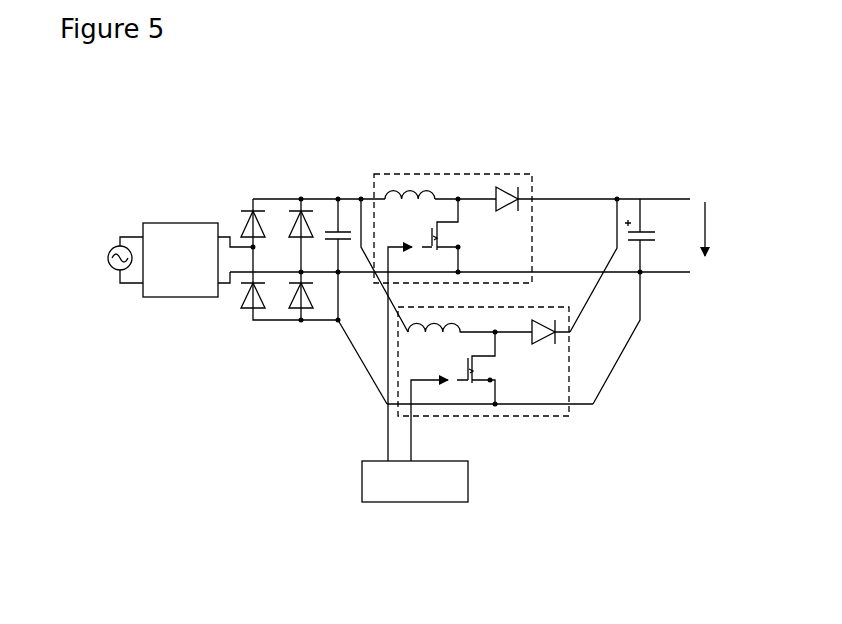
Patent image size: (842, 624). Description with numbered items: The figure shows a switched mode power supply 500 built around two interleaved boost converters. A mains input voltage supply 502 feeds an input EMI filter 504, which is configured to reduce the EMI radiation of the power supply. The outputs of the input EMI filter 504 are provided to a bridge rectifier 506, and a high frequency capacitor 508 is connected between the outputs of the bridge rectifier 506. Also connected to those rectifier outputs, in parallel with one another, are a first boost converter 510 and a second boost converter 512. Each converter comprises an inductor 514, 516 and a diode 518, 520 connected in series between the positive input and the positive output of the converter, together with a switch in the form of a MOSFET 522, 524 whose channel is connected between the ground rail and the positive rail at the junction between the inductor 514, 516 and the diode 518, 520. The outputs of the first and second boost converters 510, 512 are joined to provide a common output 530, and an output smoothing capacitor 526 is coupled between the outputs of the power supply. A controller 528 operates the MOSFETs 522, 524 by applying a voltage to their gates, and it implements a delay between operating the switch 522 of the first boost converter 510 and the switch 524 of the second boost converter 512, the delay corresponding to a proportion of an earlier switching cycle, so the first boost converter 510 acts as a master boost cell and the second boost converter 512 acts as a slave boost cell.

The switched mode power supply 500 is at (600, 130).
The mains input voltage supply 502 is at (115, 272).
The input EMI filter 504 is at (192, 297).
The bridge rectifier 506 is at (305, 184).
The high frequency capacitor 508 is at (349, 232).
The first boost converter 510 is at (392, 173).
The second boost converter 512 is at (535, 418).
The inductor 514 is at (405, 190).
The inductor 516 is at (410, 323).
The diode 518 is at (517, 187).
The diode 520 is at (557, 333).
The MOSFET switch 522 is at (447, 222).
The MOSFET switch 524 is at (478, 383).
The output smoothing capacitor 526 is at (648, 232).
The controller 528 is at (400, 502).
The common output 530 is at (705, 225).